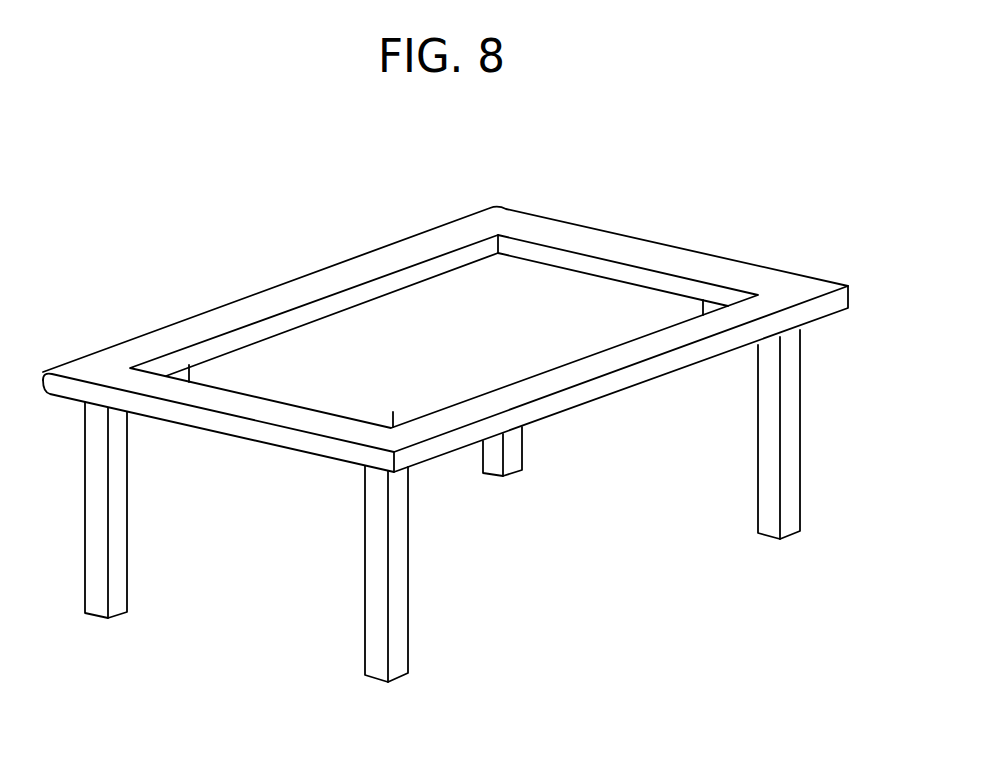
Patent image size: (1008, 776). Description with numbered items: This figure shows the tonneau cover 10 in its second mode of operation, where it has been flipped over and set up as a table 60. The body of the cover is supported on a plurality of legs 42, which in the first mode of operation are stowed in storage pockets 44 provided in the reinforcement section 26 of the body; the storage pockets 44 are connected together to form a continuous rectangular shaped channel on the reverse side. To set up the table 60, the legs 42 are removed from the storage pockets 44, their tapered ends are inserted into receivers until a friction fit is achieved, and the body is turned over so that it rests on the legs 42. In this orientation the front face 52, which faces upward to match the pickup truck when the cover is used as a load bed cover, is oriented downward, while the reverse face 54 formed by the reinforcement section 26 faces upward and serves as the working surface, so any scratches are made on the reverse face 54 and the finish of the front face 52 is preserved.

The tonneau cover 10 is at (248, 254).
The reinforcement section 26 is at (812, 282).
The legs 42 is at (370, 570).
The storage pockets 44 is at (578, 268).
The front face 52 is at (640, 390).
The reverse face 54 is at (735, 272).
The table 60 is at (157, 664).